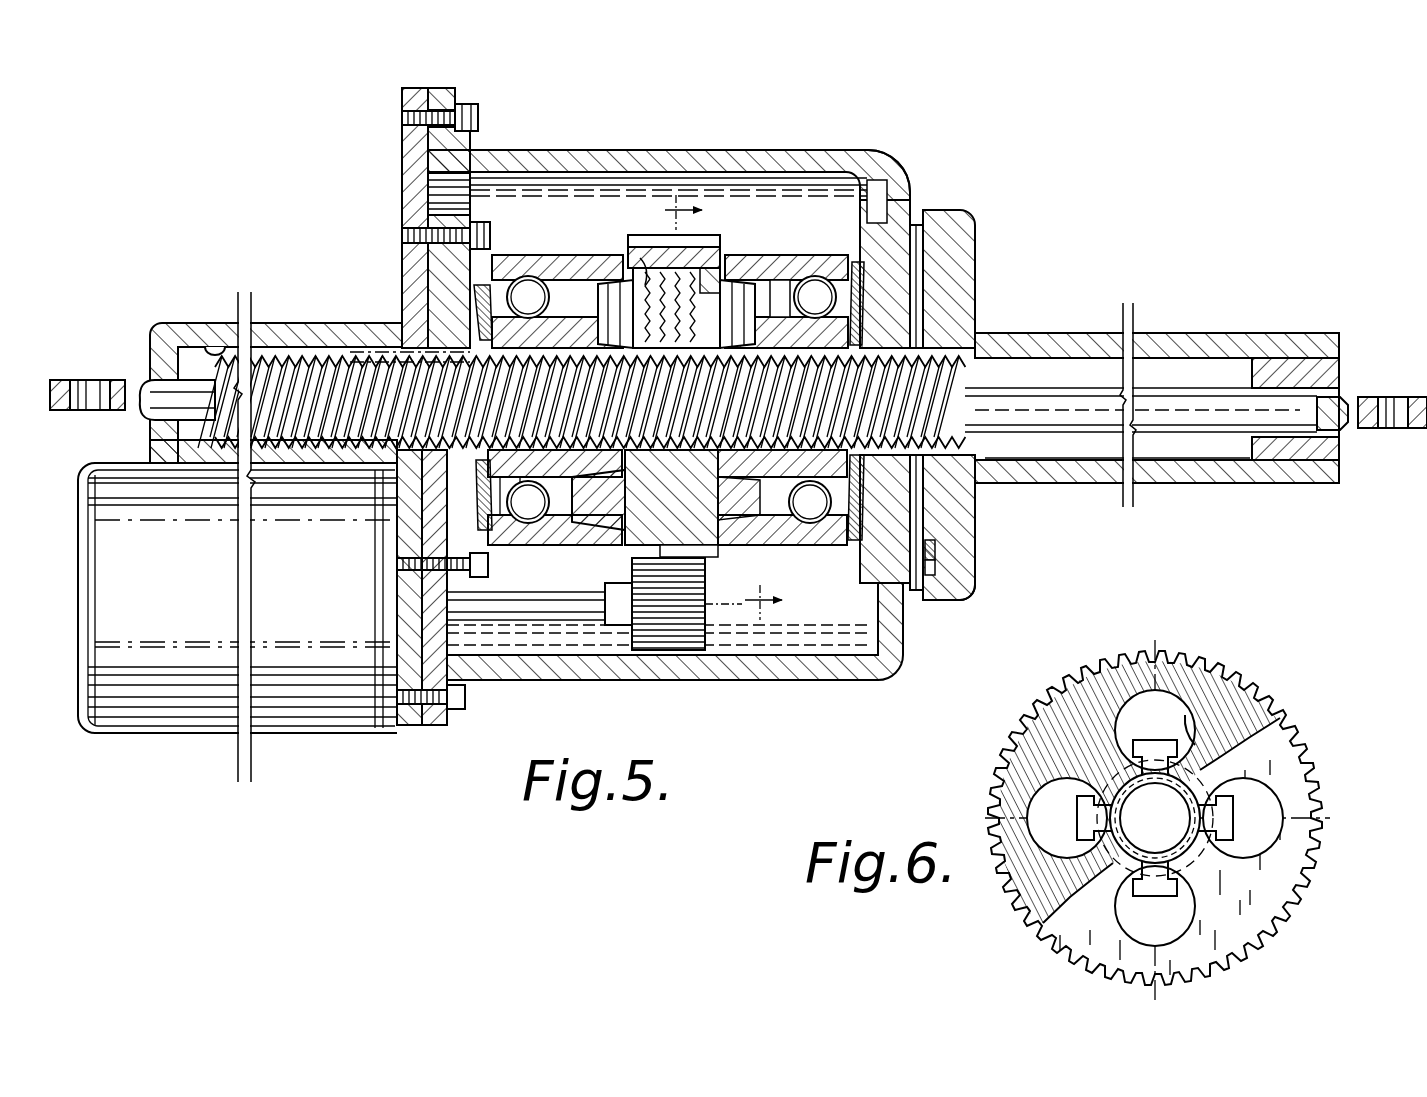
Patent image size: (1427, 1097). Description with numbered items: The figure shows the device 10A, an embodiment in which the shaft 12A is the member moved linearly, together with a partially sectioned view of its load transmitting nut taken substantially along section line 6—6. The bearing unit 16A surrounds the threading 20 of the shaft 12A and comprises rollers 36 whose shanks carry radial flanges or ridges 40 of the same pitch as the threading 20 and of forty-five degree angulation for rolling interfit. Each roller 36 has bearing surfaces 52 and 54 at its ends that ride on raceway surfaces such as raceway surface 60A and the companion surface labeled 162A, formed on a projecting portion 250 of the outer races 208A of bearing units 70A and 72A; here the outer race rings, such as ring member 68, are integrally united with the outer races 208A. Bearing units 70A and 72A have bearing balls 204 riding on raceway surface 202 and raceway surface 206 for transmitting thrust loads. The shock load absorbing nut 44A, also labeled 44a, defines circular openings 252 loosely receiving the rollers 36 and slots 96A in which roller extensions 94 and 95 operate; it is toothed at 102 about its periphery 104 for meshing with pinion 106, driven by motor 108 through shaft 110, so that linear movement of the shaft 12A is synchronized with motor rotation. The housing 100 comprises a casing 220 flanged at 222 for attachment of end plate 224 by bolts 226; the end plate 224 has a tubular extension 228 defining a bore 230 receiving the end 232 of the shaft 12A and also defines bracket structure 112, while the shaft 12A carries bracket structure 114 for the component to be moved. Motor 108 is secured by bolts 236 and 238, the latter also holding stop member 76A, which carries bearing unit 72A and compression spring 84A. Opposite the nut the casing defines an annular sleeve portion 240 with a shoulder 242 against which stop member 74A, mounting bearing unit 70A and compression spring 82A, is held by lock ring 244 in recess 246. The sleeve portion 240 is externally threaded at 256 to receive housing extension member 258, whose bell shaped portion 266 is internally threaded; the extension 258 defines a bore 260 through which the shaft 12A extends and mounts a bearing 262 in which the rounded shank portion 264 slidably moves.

In FIG. 5, the device 10A is at (1052, 215).
In FIG. 5, the shaft 12A is at (1037, 380).
In FIG. 5, the bearing unit 16A is at (782, 240).
In FIG. 5, the threading 20 is at (962, 364).
In FIG. 5, the rollers 36 is at (735, 288).
In FIG. 5, the radial flanges or ridges 40 is at (660, 250).
In FIG. 6, the shock load absorbing nut 44A is at (1292, 785).
In FIG. 5, the shock load absorbing nut 44a is at (729, 580).
In FIG. 5, the bearing surface 52 is at (768, 300).
In FIG. 5, the bearing surface 54 is at (608, 285).
In FIG. 5, the raceway surface 60A is at (714, 497).
In FIG. 5, the ring member 68 is at (962, 600).
In FIG. 5, the bearing unit 70A is at (822, 255).
In FIG. 5, the bearing unit 72A is at (538, 252).
In FIG. 5, the stop member 74A is at (915, 205).
In FIG. 5, the stop member 76A is at (462, 215).
In FIG. 5, the compression spring 82A is at (918, 272).
In FIG. 5, the compression spring 84A is at (474, 290).
In FIG. 5, the roller extension 94 is at (800, 297).
In FIG. 5, the roller extension 95 is at (585, 275).
In FIG. 6, the slots 96A is at (1262, 845).
In FIG. 5, the housing 100 is at (902, 173).
In FIG. 5, the teeth 102 is at (728, 270).
In FIG. 6, the teeth 102 is at (1307, 732).
In FIG. 5, the periphery 104 is at (645, 258).
In FIG. 6, the periphery 104 is at (1318, 830).
In FIG. 5, the pinion 106 is at (680, 652).
In FIG. 5, the motor 108 is at (205, 706).
In FIG. 5, the shaft 110 is at (530, 602).
In FIG. 5, the bracket structure 112 is at (60, 388).
In FIG. 5, the bracket structure 114 is at (1420, 397).
In FIG. 5, the wedge member 162A is at (619, 489).
In FIG. 5, the raceway surface 202 is at (675, 396).
In FIG. 5, the bearing balls 204 is at (689, 553).
In FIG. 5, the raceway surface 206 is at (667, 517).
In FIG. 5, the outer race 208A is at (672, 533).
In FIG. 5, the casing 220 is at (875, 155).
In FIG. 5, the flange 222 is at (440, 730).
In FIG. 5, the end plate 224 is at (402, 200).
In FIG. 5, the bolts 226 is at (415, 120).
In FIG. 5, the tubular extension 228 is at (306, 330).
In FIG. 5, the bore 230 is at (215, 346).
In FIG. 5, the end 232 is at (215, 397).
In FIG. 5, the bolts 236 is at (400, 722).
In FIG. 5, the bolts 238 is at (402, 236).
In FIG. 5, the annular sleeve portion 240 is at (904, 622).
In FIG. 5, the shoulder 242 is at (877, 588).
In FIG. 5, the lock ring 244 is at (935, 552).
In FIG. 5, the recess 246 is at (937, 568).
In FIG. 5, the projecting portion 250 is at (673, 500).
In FIG. 5, the circular openings 252 is at (716, 235).
In FIG. 6, the circular openings 252 is at (1187, 715).
In FIG. 5, the external threading 256 is at (945, 212).
In FIG. 5, the housing extension member 258 is at (1150, 335).
In FIG. 5, the bore 260 is at (1152, 462).
In FIG. 5, the bearing 262 is at (1270, 365).
In FIG. 5, the rounded shank portion 264 is at (1226, 432).
In FIG. 5, the bell shaped portion 266 is at (950, 522).
In FIG. 5, the section line 6 is at (717, 404).